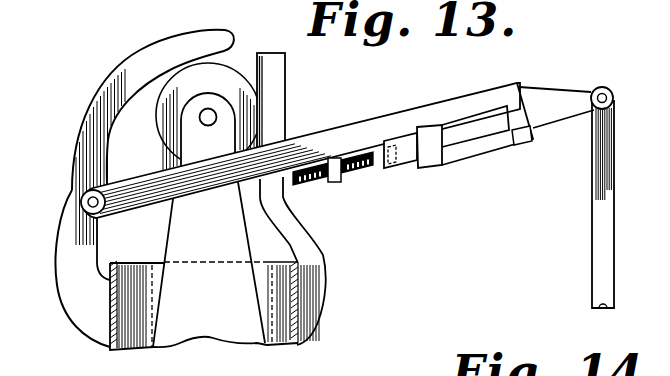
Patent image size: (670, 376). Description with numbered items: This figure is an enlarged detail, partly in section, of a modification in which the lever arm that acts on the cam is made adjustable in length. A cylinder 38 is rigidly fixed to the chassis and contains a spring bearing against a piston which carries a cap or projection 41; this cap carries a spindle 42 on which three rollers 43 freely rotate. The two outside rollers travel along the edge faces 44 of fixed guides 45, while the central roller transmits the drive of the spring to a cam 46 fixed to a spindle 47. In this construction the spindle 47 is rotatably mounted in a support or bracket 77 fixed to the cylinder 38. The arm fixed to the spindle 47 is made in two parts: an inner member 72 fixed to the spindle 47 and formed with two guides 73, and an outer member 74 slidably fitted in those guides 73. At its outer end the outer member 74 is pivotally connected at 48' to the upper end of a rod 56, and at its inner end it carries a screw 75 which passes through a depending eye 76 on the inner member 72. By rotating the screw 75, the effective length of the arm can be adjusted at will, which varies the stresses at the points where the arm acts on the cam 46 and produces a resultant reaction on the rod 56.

The cylinder 38 is at (110, 333).
The cap or projection 41 is at (190, 224).
The spindle 42 is at (207, 117).
The rollers 43 is at (228, 75).
The edge faces 44 is at (262, 80).
The fixed guides 45 is at (275, 107).
The cam 46 is at (104, 103).
The spindle 47 is at (90, 205).
The pivotal connection 48' is at (559, 143).
The rod 56 is at (598, 237).
The inner member 72 is at (368, 127).
The guides 73 is at (518, 141).
The outer member 74 is at (567, 100).
The screw 75 is at (365, 178).
The depending eye 76 is at (336, 182).
The support or bracket 77 is at (83, 288).